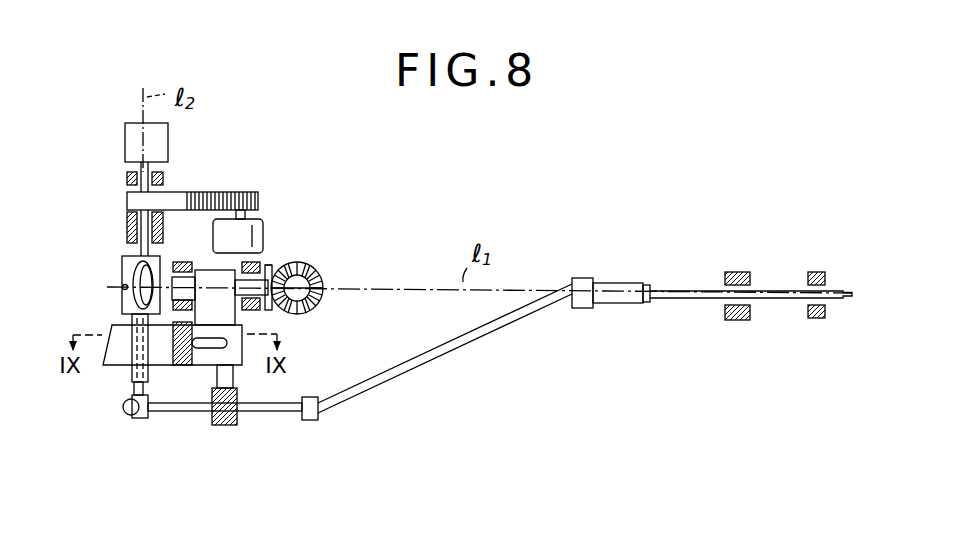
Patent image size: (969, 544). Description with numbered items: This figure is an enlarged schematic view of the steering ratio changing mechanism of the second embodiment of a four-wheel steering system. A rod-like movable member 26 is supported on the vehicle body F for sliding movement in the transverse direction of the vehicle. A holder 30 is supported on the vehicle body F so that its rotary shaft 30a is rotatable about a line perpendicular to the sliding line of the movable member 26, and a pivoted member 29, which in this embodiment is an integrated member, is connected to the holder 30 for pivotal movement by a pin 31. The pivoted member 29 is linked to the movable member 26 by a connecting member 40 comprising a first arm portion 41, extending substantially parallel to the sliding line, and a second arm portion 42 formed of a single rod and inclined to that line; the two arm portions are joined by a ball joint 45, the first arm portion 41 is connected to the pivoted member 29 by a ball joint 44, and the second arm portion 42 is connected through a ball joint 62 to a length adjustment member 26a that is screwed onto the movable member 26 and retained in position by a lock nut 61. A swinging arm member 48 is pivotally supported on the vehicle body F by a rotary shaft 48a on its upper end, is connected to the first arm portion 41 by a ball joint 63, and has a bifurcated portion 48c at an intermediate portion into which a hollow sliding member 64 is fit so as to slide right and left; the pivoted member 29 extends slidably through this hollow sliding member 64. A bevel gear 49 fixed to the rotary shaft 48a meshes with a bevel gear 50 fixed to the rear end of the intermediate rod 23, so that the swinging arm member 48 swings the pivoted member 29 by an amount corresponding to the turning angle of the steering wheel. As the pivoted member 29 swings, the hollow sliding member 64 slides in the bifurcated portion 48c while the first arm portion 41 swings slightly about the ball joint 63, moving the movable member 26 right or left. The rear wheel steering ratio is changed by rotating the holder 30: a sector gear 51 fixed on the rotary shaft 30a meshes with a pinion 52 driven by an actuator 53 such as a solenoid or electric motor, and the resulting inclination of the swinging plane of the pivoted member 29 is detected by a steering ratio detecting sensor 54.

The steering ratio detecting sensor 54 is at (169, 143).
The rotary shaft 30a is at (132, 221).
The sector gear 51 is at (203, 191).
The pinion 52 is at (251, 191).
The actuator 53 is at (266, 223).
The holder 30 is at (124, 258).
The pin 31 is at (130, 300).
The pivoted member 29 is at (160, 308).
The rotary shaft 48a is at (250, 280).
The bevel gear 49 is at (275, 264).
The bevel gear 50 is at (312, 273).
The intermediate rod 23 is at (313, 304).
The swinging arm member 48 is at (240, 366).
The bifurcated portion 48c is at (166, 358).
The hollow sliding member 64 is at (130, 372).
The ball joint 44 is at (155, 421).
The ball joint 63 is at (225, 427).
The first arm portion 41 is at (262, 413).
The ball joint 45 is at (312, 422).
The second arm portion 42 is at (405, 372).
The connecting member 40 is at (454, 363).
The ball joint 62 is at (583, 309).
The length adjustment member 26a is at (612, 282).
The lock nut 61 is at (647, 303).
The movable member 26 is at (766, 290).
The vehicle body F is at (184, 262).